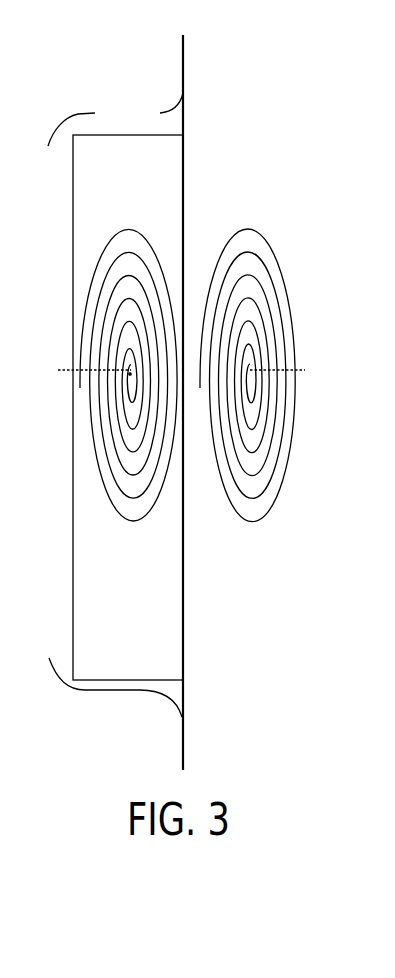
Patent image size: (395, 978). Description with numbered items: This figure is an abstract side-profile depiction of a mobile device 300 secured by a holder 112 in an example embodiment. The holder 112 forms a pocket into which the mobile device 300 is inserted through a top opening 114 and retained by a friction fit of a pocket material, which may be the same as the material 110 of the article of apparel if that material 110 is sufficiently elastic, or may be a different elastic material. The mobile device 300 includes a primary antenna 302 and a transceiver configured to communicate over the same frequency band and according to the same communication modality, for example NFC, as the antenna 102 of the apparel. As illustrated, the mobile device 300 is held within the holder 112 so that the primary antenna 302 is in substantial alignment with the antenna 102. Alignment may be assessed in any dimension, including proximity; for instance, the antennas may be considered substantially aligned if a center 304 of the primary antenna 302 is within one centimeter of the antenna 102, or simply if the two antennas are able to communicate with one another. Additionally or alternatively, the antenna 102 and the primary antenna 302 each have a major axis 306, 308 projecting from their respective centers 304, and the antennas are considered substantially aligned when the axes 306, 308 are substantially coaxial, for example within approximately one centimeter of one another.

The antenna 102 is at (242, 458).
The material 110 is at (185, 55).
The holder 112 is at (72, 117).
The top opening 114 is at (118, 113).
The mobile device 300 is at (167, 200).
The primary antenna 302 is at (132, 406).
The center 304 is at (128, 376).
The major axis 306 is at (302, 368).
The major axis 308 is at (78, 367).